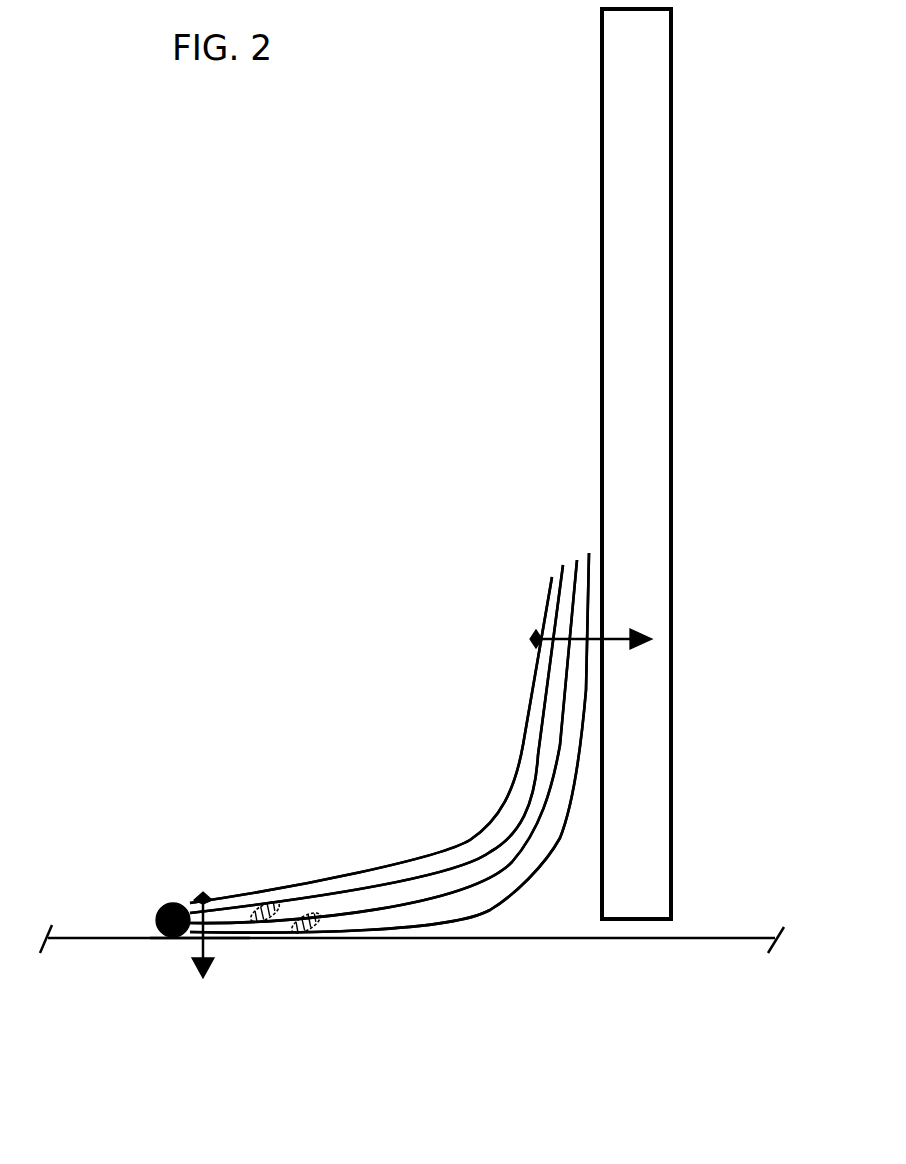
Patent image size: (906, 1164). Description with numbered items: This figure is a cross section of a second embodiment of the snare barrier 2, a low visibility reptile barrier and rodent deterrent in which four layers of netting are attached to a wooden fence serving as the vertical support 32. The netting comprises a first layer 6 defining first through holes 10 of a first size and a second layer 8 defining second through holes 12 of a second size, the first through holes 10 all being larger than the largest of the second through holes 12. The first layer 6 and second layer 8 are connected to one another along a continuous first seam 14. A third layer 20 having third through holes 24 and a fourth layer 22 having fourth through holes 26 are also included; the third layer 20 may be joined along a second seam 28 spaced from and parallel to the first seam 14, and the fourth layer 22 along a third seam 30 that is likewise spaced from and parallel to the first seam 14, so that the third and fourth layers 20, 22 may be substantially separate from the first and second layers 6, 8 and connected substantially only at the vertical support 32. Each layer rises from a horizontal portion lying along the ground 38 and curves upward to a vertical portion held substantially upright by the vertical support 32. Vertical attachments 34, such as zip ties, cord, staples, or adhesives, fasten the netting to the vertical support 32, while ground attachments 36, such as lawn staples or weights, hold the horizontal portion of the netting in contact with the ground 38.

The snare barrier 2 is at (204, 478).
The first layer 6 is at (548, 602).
The second layer 8 is at (548, 683).
The first through holes 10 is at (500, 783).
The second through holes 12 is at (363, 880).
The first seam 14 is at (160, 915).
The third layer 20 is at (558, 750).
The fourth layer 22 is at (590, 690).
The third through holes 24 is at (520, 872).
The fourth through holes 26 is at (578, 832).
The second seam 28 is at (243, 921).
The third seam 30 is at (322, 924).
The vertical support 32 is at (598, 328).
The vertical attachments 34 is at (617, 637).
The ground attachments 36 is at (205, 948).
The ground 38 is at (107, 937).